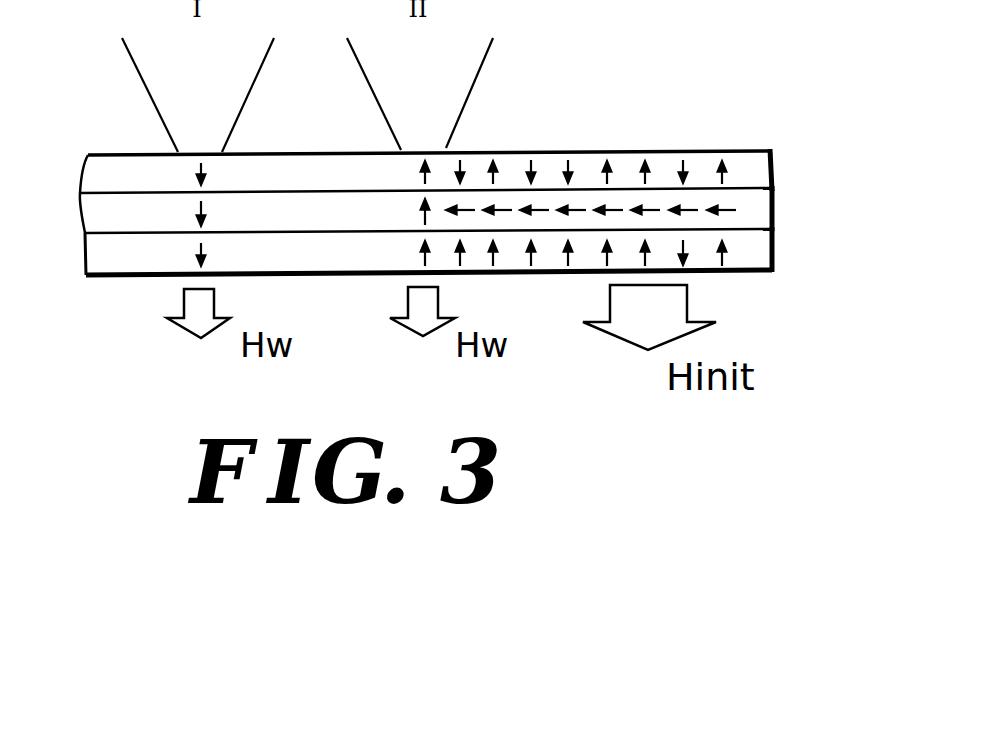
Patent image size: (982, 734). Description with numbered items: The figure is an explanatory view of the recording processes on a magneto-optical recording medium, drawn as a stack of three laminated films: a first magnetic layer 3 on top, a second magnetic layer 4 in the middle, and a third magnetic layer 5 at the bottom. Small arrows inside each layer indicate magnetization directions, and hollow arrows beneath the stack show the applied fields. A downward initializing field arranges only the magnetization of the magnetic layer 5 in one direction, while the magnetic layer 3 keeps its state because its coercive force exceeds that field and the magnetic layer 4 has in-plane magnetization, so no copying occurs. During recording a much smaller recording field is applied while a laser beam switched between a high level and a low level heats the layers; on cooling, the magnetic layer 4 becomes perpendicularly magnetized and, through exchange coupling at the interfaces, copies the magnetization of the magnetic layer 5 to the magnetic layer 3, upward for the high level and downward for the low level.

The magnetic layer (first magnetic layer) 3 is at (771, 158).
The magnetic layer (second magnetic layer) 4 is at (773, 197).
The magnetic layer (third magnetic layer) 5 is at (773, 247).